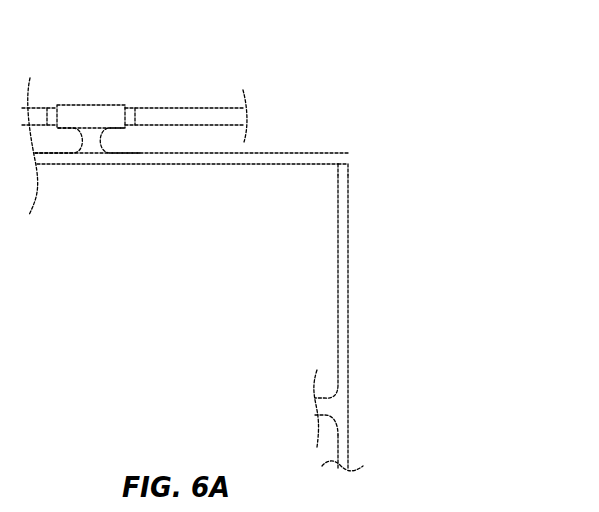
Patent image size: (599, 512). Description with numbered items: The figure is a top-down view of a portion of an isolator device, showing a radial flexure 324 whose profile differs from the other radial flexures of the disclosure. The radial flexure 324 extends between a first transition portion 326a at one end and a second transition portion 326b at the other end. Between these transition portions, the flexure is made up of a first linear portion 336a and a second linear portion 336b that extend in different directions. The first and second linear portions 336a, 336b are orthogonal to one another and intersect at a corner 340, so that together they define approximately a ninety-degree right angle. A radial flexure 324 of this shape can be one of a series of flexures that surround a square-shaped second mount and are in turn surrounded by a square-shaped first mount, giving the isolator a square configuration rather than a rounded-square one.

The radial flexure 324 is at (432, 113).
The first transition portion 326a is at (91, 118).
The second transition portion 326b is at (328, 408).
The first linear portion 336a is at (300, 153).
The second linear portion 336b is at (345, 245).
The corner 340 is at (346, 158).